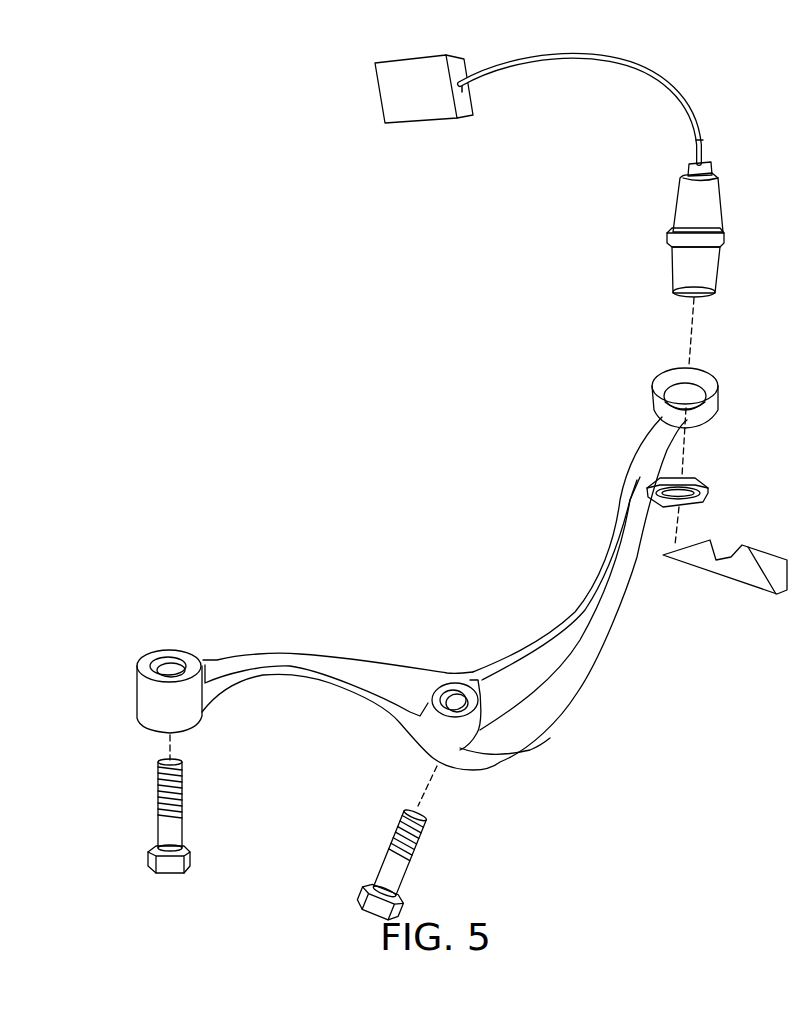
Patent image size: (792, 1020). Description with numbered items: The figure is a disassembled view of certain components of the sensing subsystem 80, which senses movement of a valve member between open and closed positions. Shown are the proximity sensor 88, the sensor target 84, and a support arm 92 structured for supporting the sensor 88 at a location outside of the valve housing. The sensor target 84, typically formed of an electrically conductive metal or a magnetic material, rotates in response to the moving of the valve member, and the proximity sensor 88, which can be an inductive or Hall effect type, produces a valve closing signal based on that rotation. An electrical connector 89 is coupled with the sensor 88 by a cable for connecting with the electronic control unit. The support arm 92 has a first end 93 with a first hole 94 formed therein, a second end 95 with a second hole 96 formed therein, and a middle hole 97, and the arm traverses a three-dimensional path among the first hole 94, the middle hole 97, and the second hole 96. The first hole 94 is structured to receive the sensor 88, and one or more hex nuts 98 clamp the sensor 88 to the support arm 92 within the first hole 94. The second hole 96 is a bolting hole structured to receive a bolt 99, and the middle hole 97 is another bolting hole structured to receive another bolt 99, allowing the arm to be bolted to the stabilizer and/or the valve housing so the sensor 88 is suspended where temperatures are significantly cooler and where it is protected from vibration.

The sensing subsystem 80 is at (280, 295).
The sensor target 84 is at (771, 548).
The proximity sensor 88 is at (722, 185).
The electrical connector 89 is at (375, 100).
The support arm 92 is at (590, 687).
The first end 93 is at (725, 392).
The first hole 94 is at (660, 408).
The second end 95 is at (132, 695).
The second hole 96 is at (172, 666).
The middle hole 97 is at (453, 698).
The hex nut 98 is at (718, 492).
The bolt 99 is at (190, 856).